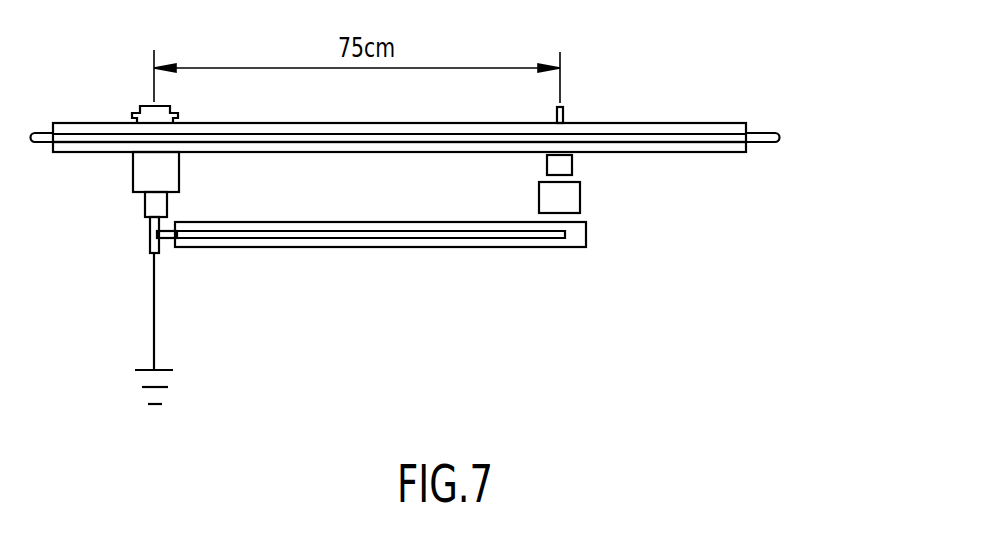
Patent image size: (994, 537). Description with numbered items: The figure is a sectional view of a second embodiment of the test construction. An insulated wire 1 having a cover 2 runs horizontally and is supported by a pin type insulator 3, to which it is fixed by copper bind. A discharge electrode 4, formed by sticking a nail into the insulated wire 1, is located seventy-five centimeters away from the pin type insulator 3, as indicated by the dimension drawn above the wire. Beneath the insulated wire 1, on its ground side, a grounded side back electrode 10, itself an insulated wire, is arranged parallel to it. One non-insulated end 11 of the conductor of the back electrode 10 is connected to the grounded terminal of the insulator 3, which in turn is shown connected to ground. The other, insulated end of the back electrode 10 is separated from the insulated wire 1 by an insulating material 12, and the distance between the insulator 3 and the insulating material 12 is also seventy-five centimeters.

The insulated wire 1 is at (290, 138).
The cover 2 is at (357, 148).
The pin type insulator 3 is at (133, 171).
The discharge electrode 4 is at (563, 112).
The grounded side back electrode 10 is at (385, 247).
The non-insulated end 11 is at (162, 236).
The insulating material 12 is at (580, 198).